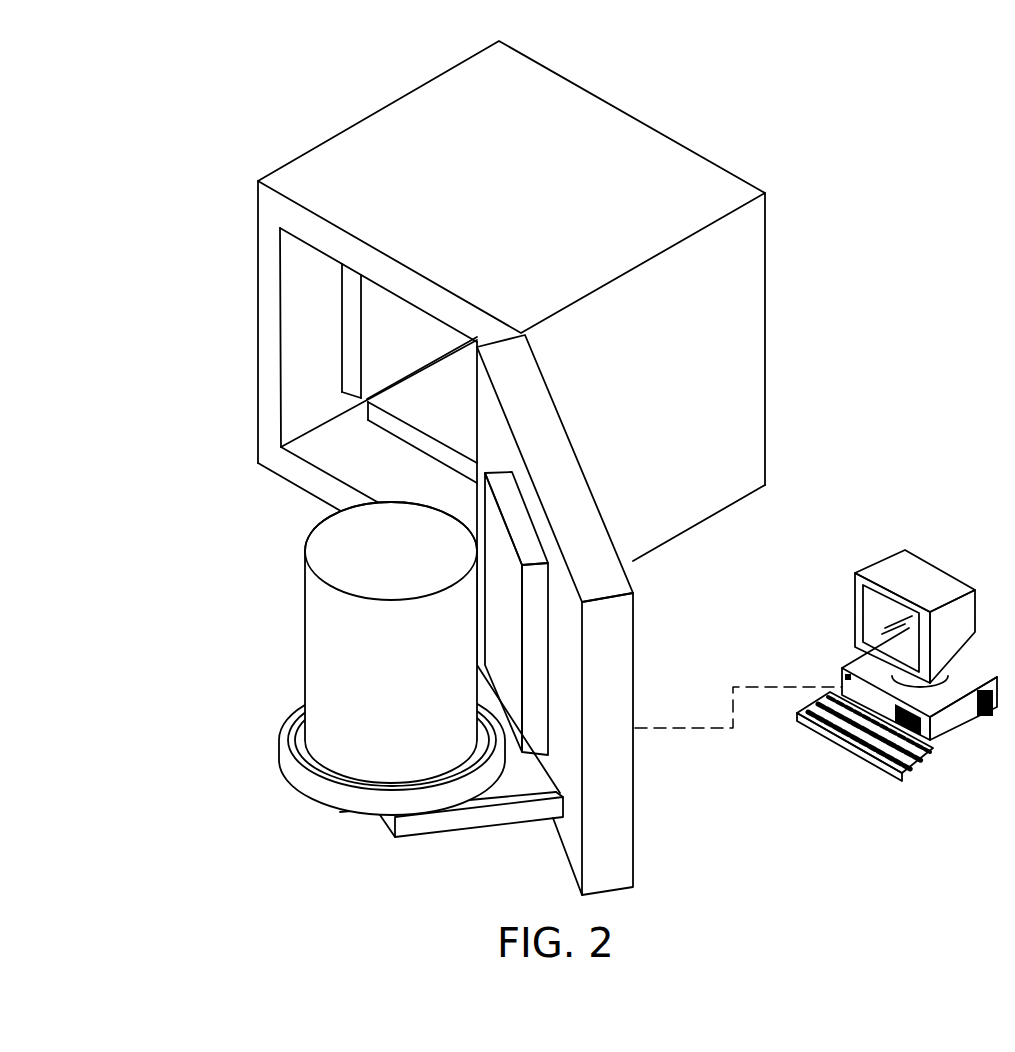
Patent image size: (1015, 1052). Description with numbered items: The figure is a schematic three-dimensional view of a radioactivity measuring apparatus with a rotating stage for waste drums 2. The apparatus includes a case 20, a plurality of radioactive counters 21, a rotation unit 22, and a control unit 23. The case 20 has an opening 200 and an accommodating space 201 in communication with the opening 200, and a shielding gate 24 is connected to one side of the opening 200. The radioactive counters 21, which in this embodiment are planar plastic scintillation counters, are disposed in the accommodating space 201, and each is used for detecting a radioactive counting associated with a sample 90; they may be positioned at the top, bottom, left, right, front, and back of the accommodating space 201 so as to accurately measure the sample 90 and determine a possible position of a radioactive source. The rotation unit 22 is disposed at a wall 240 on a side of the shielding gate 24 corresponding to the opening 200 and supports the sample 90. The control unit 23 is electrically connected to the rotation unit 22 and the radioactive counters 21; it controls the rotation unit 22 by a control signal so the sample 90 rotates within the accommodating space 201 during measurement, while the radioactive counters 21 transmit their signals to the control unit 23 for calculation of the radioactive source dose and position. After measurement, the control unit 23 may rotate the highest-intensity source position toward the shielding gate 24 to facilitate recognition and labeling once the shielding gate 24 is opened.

The radioactivity measuring apparatus with a rotating stage for waste drums 2 is at (104, 106).
The case 20 is at (735, 297).
The opening 200 is at (288, 332).
The accommodating space 201 is at (456, 415).
The radioactive counters 21 is at (308, 275).
The rotation unit 22 is at (278, 700).
The control unit 23 is at (860, 672).
The shielding gate 24 is at (592, 528).
The wall 240 is at (572, 769).
The sample 90 is at (308, 603).